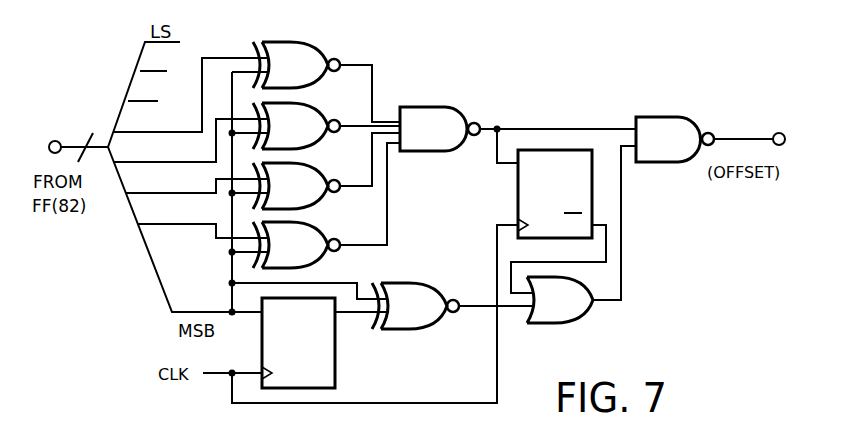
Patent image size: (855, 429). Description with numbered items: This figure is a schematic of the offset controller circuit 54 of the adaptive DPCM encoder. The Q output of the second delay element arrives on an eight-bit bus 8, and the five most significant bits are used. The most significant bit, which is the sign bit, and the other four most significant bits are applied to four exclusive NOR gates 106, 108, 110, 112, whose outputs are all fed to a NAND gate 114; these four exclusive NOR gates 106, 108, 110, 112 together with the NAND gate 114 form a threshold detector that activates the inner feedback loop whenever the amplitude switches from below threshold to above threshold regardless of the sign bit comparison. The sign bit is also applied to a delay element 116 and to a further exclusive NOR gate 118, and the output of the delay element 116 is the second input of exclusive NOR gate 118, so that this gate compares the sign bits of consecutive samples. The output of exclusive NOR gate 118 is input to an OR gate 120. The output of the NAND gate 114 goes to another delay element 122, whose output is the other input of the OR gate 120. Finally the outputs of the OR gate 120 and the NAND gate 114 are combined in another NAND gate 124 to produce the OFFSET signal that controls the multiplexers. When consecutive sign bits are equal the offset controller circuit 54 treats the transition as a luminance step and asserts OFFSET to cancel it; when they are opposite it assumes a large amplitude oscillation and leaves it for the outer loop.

The eight-bit bus 8 is at (84, 143).
The offset controller circuit 54 is at (548, 82).
The exclusive NOR gate 106 is at (302, 223).
The exclusive NOR gate 108 is at (302, 163).
The exclusive NOR gate 110 is at (302, 102).
The exclusive NOR gate 112 is at (302, 41).
The NAND gate 114 is at (410, 105).
The delay element 116 is at (337, 352).
The exclusive NOR gate 118 is at (443, 285).
The OR gate 120 is at (587, 305).
The delay element 122 is at (518, 212).
The NAND gate 124 is at (692, 116).